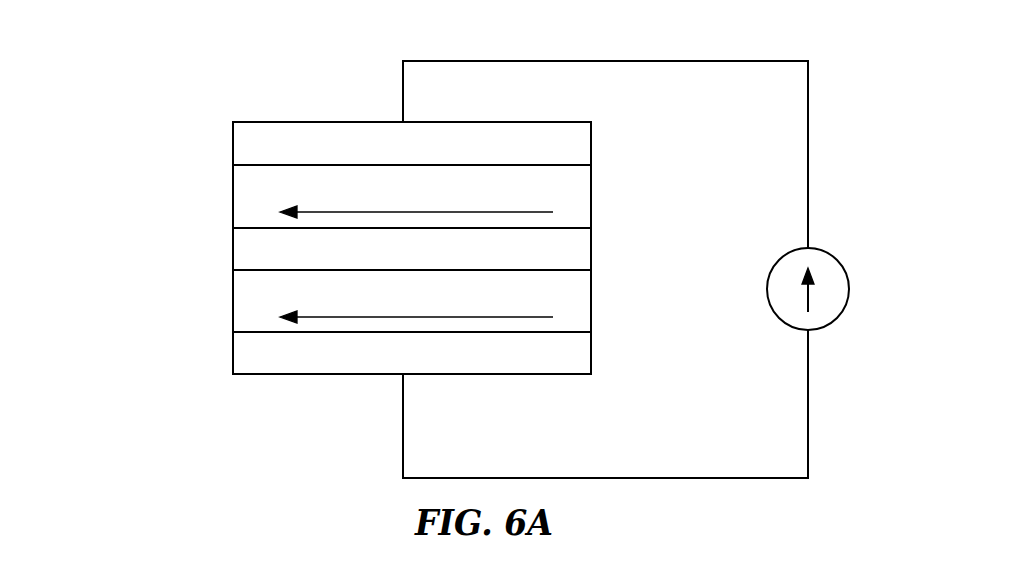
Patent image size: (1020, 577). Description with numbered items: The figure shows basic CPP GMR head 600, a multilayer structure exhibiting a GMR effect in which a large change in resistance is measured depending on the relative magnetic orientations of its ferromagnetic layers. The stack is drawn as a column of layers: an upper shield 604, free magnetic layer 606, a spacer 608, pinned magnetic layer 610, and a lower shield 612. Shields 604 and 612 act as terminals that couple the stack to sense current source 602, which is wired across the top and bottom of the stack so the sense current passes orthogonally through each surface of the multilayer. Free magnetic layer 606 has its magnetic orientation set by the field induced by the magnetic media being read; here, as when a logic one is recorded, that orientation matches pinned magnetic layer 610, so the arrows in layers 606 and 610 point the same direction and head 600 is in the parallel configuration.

The CPP GMR head 600 is at (128, 390).
The sense current source 602 is at (850, 288).
The shield 604 is at (591, 145).
The free magnetic layer 606 is at (233, 183).
The spacer 608 is at (591, 245).
The pinned magnetic layer 610 is at (233, 305).
The shield 612 is at (591, 367).